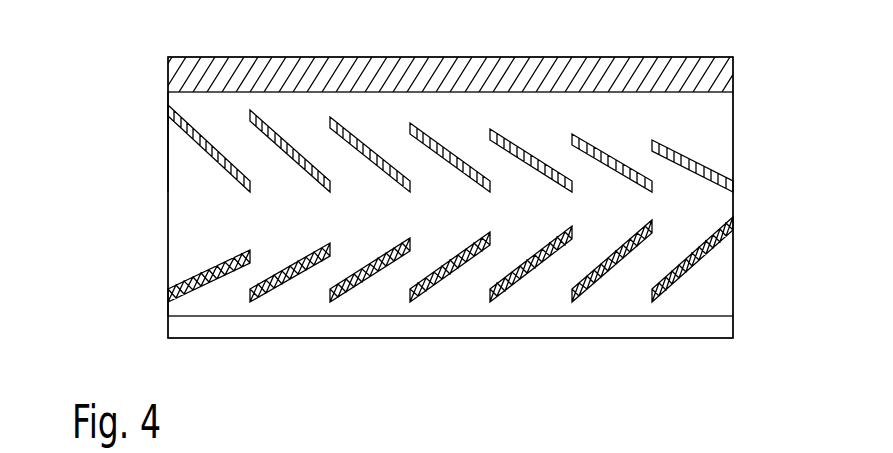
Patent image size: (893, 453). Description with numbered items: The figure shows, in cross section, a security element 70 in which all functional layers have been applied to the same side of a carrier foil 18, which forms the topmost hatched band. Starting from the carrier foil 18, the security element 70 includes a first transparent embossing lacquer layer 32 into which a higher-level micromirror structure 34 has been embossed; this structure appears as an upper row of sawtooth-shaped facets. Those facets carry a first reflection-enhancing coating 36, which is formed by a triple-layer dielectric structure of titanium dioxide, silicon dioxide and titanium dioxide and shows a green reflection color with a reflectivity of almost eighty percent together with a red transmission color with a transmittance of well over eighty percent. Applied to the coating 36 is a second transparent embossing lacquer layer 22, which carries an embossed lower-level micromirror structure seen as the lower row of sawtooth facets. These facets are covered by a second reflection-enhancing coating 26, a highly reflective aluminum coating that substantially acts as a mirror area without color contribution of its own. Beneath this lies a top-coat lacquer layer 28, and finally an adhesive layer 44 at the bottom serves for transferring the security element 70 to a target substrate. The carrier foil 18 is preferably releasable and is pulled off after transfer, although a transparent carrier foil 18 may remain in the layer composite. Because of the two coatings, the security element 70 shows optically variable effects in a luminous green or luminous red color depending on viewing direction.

The security element 70 is at (96, 53).
The carrier foil 18 is at (720, 75).
The first transparent embossing lacquer layer 32 is at (722, 123).
The second transparent embossing lacquer layer 22 is at (182, 194).
The higher-level micromirror structure 34 is at (612, 155).
The first reflection-enhancing coating 36 is at (702, 165).
The second reflection-enhancing coating 26 is at (200, 282).
The top-coat lacquer layer 28 is at (182, 307).
The adhesive layer 44 is at (720, 327).